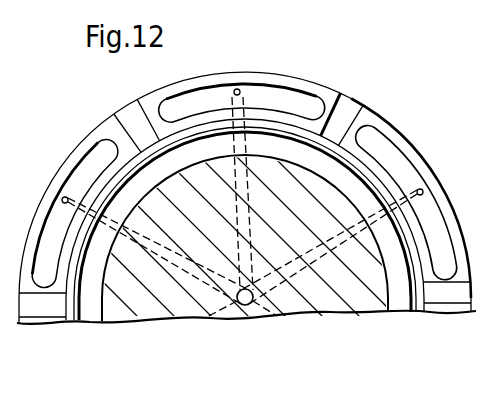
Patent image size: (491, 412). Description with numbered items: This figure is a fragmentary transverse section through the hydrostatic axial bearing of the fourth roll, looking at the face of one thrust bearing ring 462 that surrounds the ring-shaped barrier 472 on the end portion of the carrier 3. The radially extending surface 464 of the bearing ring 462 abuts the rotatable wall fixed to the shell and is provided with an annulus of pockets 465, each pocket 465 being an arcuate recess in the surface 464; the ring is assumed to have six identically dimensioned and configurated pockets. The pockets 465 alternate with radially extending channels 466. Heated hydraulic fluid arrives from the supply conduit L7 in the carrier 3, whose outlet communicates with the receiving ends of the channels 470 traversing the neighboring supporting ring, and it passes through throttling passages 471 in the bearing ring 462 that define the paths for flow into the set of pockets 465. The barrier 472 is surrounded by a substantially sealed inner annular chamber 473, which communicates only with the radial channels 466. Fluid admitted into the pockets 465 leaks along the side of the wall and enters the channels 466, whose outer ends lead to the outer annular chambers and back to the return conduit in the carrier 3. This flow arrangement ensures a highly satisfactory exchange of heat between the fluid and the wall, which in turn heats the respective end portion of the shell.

The carrier 3 is at (322, 293).
The supply conduit L7 is at (353, 285).
The thrust bearing ring 462 is at (341, 95).
The radially extending surface 464 is at (283, 98).
The pocket 465 is at (215, 98).
The radially extending channel 466 is at (130, 127).
The channel 470 is at (413, 190).
The throttling passage 471 is at (61, 197).
The ring-shaped barrier 472 is at (327, 100).
The inner annular chamber 473 is at (361, 142).